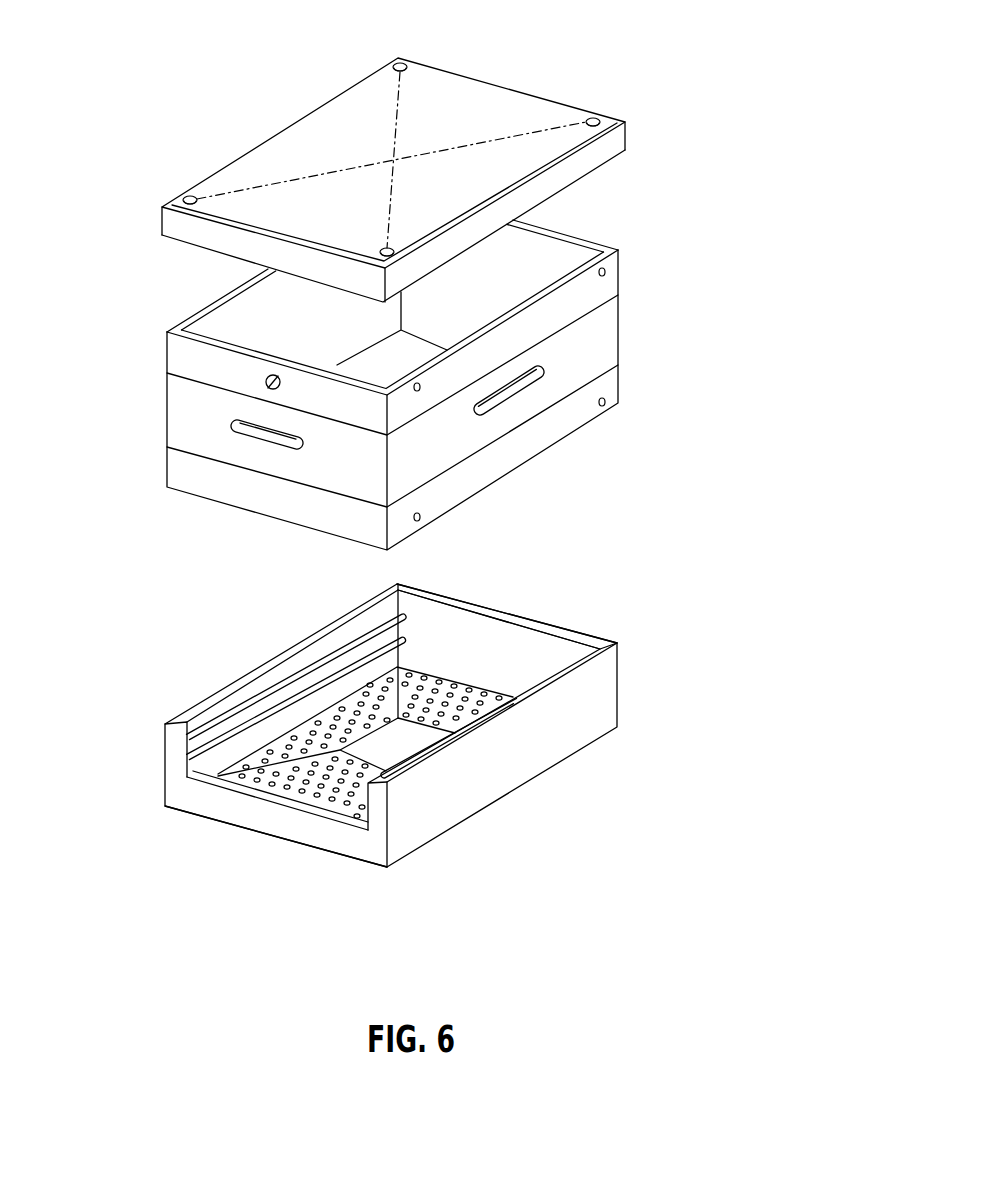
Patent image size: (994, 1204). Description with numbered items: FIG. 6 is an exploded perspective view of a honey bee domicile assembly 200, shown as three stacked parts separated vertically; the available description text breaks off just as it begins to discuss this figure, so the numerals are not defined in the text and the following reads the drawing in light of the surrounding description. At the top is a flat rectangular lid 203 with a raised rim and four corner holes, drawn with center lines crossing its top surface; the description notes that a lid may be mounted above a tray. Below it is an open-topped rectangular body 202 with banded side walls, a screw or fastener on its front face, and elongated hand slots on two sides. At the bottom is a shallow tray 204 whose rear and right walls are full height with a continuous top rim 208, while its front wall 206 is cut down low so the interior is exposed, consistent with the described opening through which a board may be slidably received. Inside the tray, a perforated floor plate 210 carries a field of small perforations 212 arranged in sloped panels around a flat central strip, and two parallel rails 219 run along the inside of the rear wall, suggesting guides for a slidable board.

The container assembly 200 is at (426, 479).
The container body 202 is at (158, 410).
The lid 203 is at (478, 90).
The tray 204 is at (350, 740).
The low front wall of tray 206 is at (236, 837).
The tray rim 208 is at (545, 613).
The perforated floor plate 210 is at (412, 754).
The perforations 212 is at (332, 796).
The rails 219 is at (306, 670).